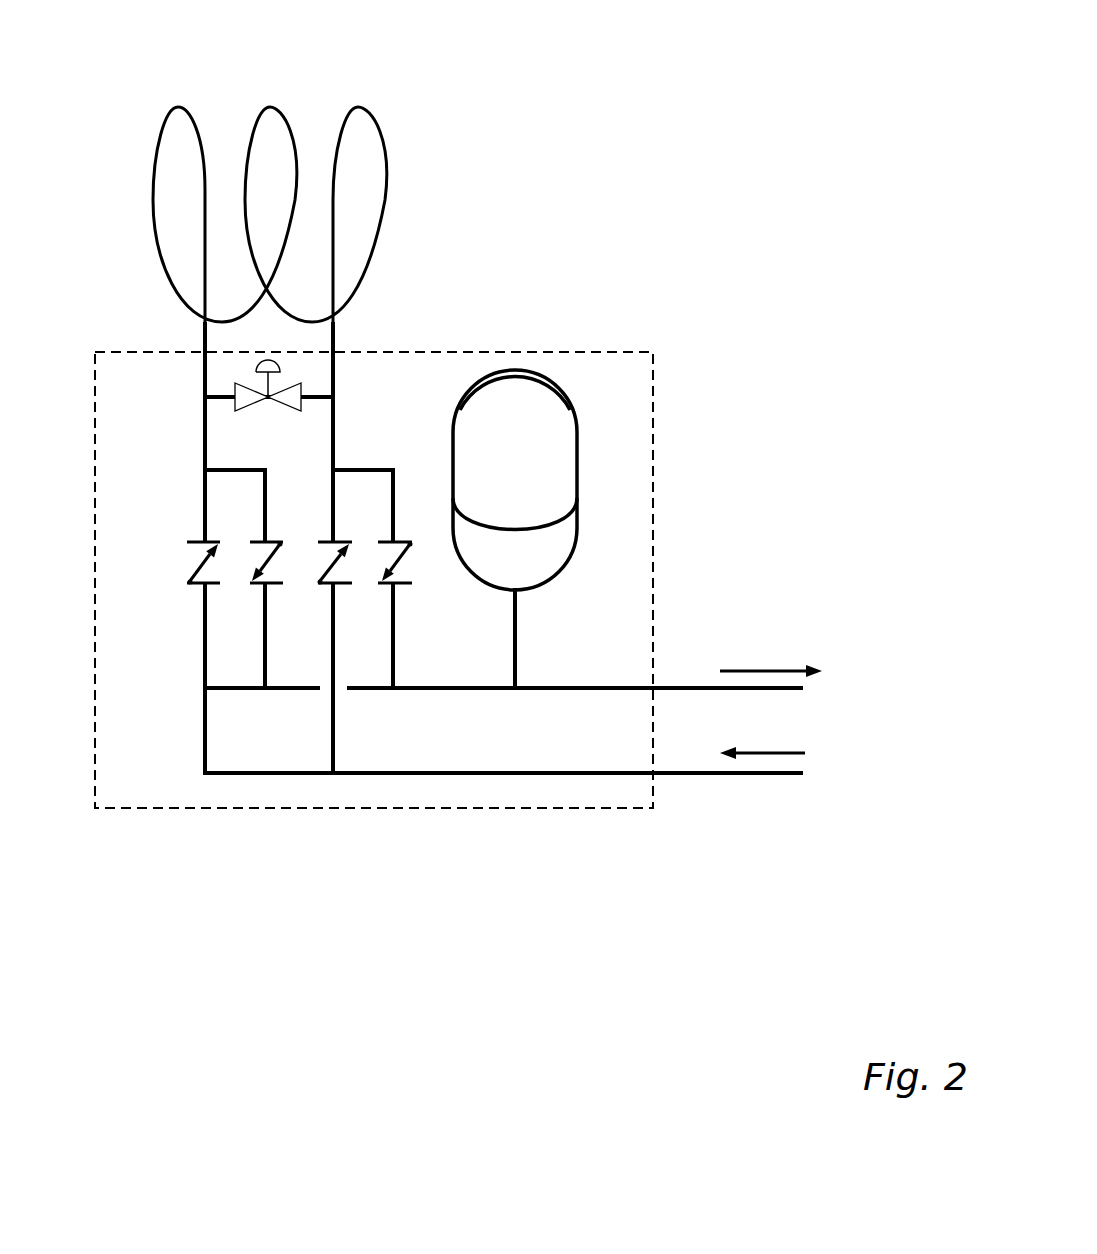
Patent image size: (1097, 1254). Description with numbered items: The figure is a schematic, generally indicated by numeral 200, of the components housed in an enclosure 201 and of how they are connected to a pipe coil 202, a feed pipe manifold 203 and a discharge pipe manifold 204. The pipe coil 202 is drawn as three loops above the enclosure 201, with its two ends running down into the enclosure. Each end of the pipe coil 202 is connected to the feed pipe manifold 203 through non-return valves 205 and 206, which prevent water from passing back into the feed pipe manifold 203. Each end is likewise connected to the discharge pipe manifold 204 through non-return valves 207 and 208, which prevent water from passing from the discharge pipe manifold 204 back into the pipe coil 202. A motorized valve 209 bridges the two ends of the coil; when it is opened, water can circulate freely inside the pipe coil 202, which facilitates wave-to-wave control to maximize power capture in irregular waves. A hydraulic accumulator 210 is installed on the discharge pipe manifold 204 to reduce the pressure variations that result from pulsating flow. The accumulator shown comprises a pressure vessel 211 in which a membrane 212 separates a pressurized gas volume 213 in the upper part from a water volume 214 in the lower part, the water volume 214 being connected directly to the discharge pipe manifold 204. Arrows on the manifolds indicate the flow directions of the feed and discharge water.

The schematic arrangement of components 200 is at (642, 178).
The enclosure 201 is at (668, 400).
The pipe coil 202 is at (292, 105).
The feed pipe manifold 203 is at (765, 795).
The discharge pipe manifold 204 is at (805, 707).
The non-return valve 205 is at (170, 577).
The non-return valve 206 is at (352, 595).
The non-return valve 207 is at (248, 593).
The non-return valve 208 is at (410, 593).
The motorized valve 209 is at (265, 410).
The hydraulic accumulator 210 is at (603, 482).
The pressure vessel 211 is at (527, 370).
The membrane 212 is at (520, 537).
The pressurized gas volume 213 is at (482, 448).
The water volume 214 is at (527, 568).